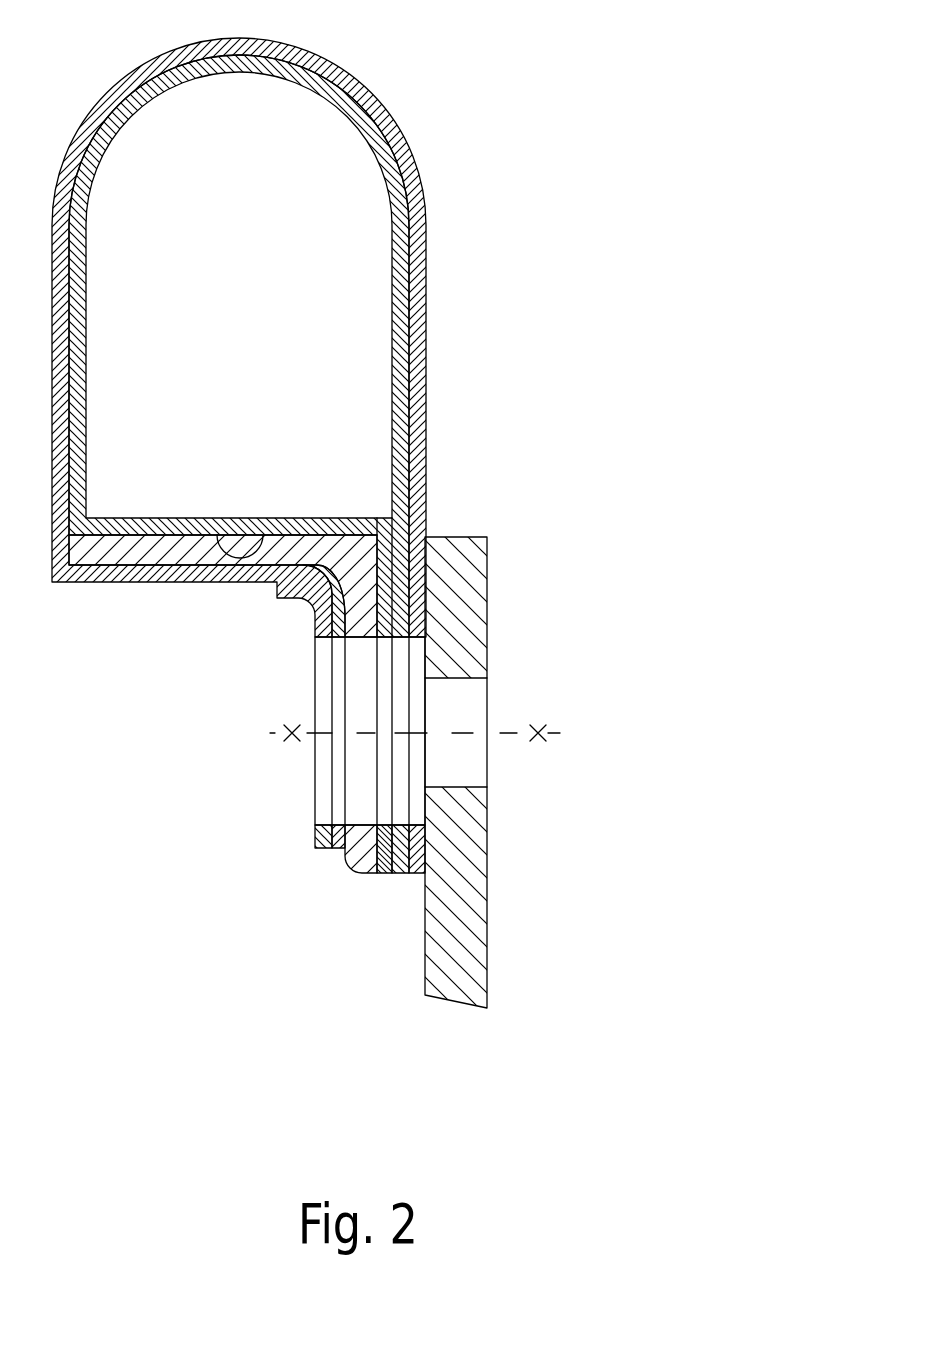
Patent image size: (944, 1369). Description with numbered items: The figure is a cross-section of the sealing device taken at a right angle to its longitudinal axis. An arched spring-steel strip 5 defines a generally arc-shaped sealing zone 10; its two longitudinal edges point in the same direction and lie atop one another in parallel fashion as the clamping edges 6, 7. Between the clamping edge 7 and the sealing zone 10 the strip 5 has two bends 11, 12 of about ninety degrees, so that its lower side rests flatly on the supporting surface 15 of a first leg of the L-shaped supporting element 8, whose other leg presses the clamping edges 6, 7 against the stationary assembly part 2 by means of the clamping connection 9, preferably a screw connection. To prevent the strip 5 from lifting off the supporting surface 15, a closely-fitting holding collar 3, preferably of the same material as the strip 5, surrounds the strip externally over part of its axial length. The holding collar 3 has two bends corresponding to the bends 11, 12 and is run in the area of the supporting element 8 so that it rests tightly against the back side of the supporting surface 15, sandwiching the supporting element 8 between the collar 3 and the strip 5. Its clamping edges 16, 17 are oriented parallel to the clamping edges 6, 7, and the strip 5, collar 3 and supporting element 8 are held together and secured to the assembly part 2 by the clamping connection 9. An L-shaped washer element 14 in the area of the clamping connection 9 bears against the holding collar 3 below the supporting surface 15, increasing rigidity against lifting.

The sealing zone 10 is at (326, 320).
The holding collar 3 is at (428, 270).
The spring-steel strip 5 is at (392, 257).
The supporting element 8 is at (165, 550).
The supporting surface 15 is at (257, 518).
The bend 12 is at (84, 508).
The bend 11 is at (387, 508).
The washer element 14 is at (315, 843).
The clamping edge of the holding collar 17 is at (335, 850).
The clamping edge 7 is at (383, 875).
The clamping edge 6 is at (402, 875).
The clamping edge of the holding collar 16 is at (413, 877).
The assembly part 2 is at (462, 850).
The clamping connection 9 is at (270, 733).